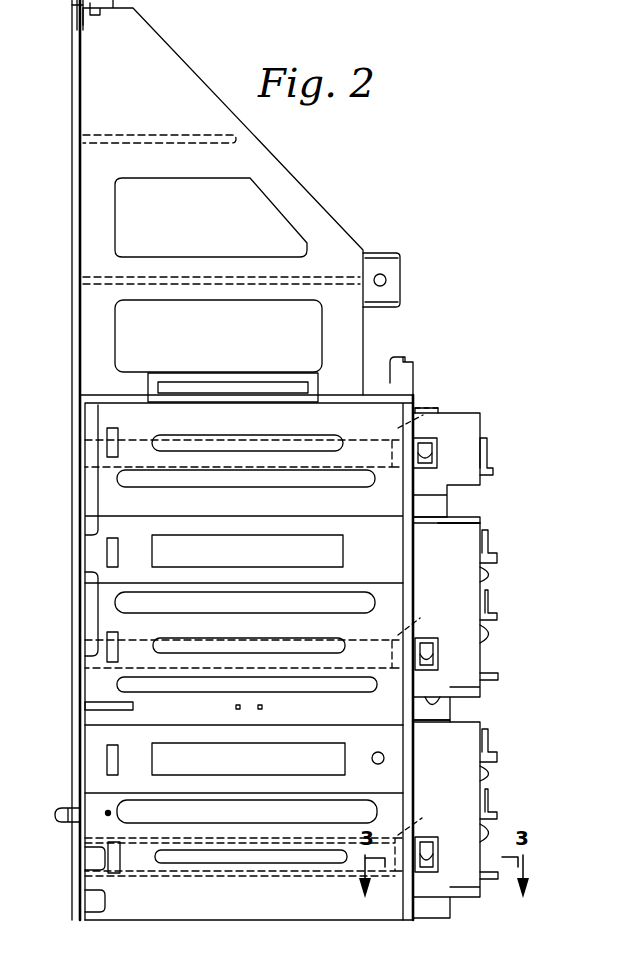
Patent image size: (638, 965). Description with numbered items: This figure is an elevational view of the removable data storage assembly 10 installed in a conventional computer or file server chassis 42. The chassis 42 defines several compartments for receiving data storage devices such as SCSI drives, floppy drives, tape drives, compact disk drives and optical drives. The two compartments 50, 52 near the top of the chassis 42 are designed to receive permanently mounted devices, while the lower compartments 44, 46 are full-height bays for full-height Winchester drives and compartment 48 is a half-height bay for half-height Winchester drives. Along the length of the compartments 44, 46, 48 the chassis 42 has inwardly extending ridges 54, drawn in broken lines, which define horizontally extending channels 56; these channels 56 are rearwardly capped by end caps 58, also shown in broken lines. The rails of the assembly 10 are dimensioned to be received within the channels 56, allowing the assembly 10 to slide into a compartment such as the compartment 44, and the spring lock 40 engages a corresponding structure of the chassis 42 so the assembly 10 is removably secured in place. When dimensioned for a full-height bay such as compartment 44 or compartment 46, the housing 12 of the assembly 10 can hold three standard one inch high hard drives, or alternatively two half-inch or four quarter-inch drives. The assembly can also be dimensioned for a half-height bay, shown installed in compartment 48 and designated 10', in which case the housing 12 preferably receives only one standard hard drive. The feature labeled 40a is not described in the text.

The assembly 10 is at (498, 720).
The assembly dimensioned for a half-height bay 10' is at (500, 445).
The housing 12 is at (486, 520).
The spring lock 40 is at (430, 450).
The connector opening 40a is at (440, 458).
The chassis 42 is at (70, 222).
The compartment 44 is at (72, 760).
The compartment 46 is at (72, 587).
The compartment 48 is at (72, 458).
The compartment 50 is at (72, 340).
The compartment 52 is at (72, 165).
The ridges 54 is at (100, 432).
The channels 56 is at (380, 445).
The end caps 58 is at (434, 407).